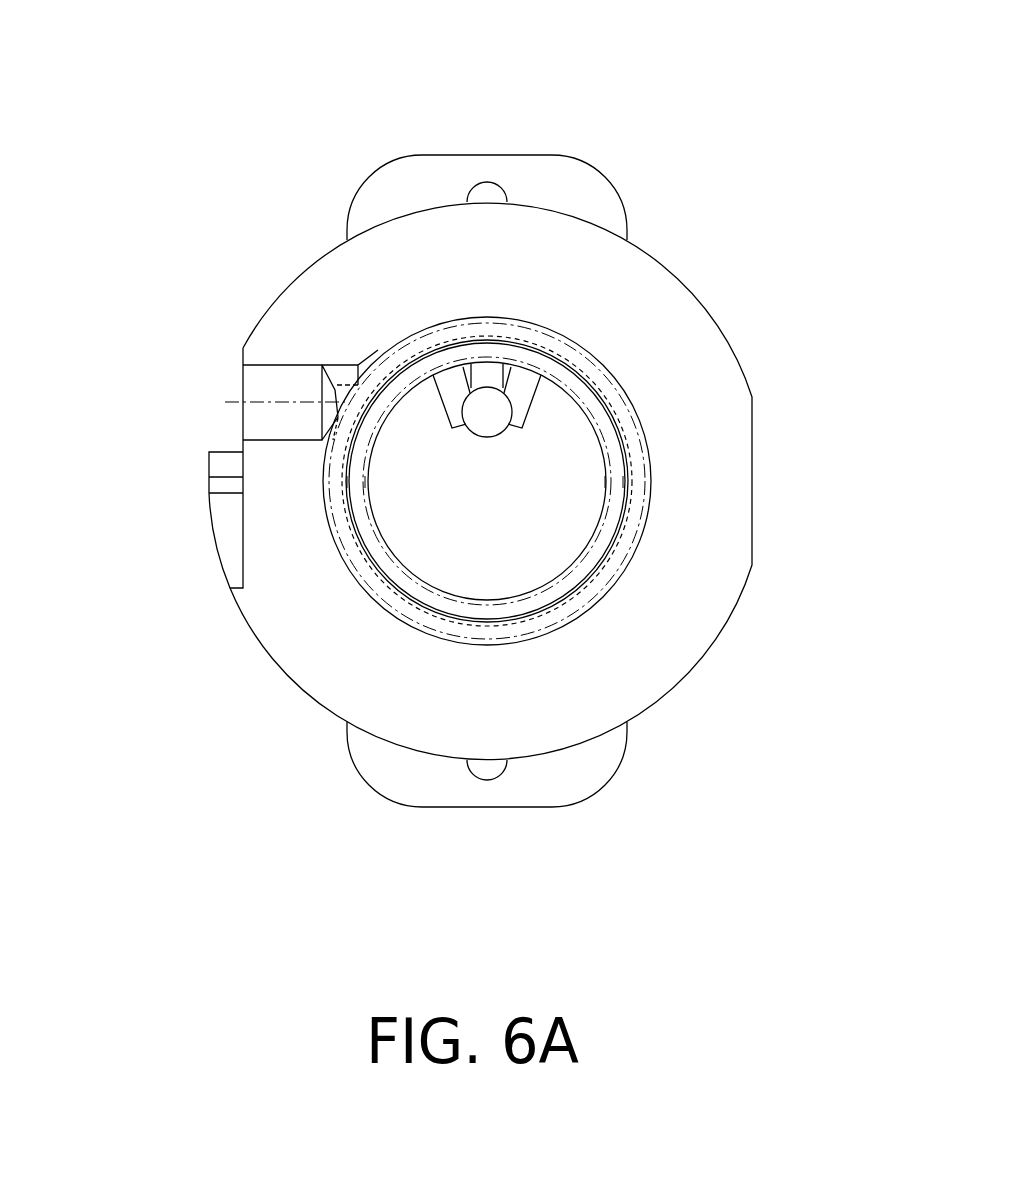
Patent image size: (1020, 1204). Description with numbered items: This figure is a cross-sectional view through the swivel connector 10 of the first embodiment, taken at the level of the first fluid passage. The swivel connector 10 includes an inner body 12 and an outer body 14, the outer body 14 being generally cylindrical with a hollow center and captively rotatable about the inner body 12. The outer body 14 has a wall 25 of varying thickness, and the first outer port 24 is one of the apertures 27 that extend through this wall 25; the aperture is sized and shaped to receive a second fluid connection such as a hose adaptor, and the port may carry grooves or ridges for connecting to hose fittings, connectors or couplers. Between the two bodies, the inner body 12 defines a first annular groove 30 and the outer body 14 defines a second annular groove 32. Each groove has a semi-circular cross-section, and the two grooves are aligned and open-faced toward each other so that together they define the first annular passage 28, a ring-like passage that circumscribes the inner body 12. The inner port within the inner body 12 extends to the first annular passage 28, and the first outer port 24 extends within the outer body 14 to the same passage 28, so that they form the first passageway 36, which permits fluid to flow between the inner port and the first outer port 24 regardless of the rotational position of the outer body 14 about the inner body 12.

The swivel connector 10 is at (729, 146).
The inner body 12 is at (490, 489).
The outer body 14 is at (684, 423).
The first outer port 24 is at (280, 407).
The wall 25 is at (347, 315).
The apertures 27 is at (253, 426).
The first annular passage 28 is at (594, 377).
The first annular groove 30 is at (563, 588).
The second annular groove 32 is at (622, 558).
The first passageway 36 is at (483, 412).